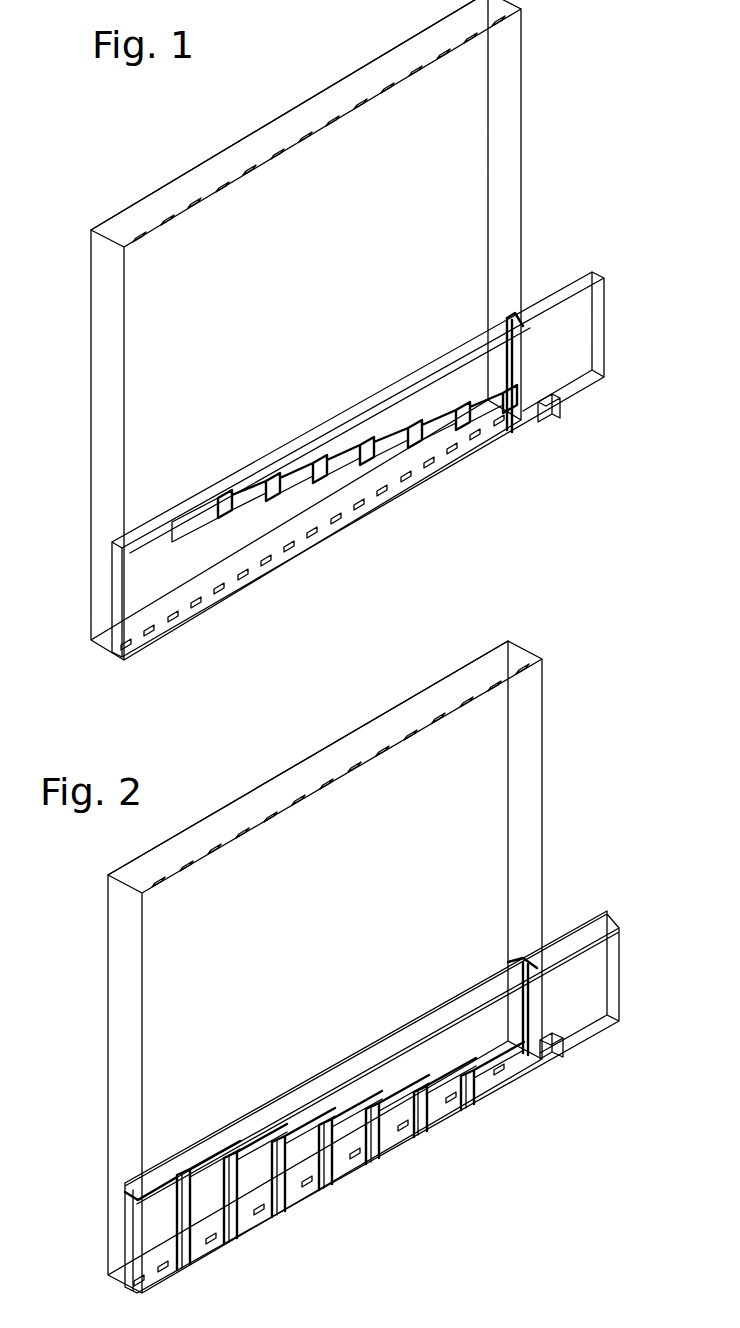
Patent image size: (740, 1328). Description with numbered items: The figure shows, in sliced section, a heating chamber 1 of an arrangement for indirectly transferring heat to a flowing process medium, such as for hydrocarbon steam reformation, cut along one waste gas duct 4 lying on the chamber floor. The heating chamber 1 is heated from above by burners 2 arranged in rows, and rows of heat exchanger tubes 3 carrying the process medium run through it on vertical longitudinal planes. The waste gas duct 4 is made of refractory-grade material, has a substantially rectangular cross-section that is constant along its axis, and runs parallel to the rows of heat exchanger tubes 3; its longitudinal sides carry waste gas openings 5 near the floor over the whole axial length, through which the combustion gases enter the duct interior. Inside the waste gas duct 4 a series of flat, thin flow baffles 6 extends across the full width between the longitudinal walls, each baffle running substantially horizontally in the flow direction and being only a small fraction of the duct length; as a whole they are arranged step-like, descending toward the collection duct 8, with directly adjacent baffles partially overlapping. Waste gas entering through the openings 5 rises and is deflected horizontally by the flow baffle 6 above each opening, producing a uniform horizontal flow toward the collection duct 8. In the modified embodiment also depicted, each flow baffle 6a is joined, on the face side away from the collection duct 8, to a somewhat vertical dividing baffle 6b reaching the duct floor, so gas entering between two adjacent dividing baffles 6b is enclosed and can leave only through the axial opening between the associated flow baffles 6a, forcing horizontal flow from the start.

In FIG. 1, the heating chamber 1 is at (98, 324).
In FIG. 2, the heating chamber 1 is at (116, 995).
In FIG. 1, the burners 2 is at (492, 22).
In FIG. 2, the burners 2 is at (517, 655).
In FIG. 1, the heat exchanger tubes 3 is at (175, 182).
In FIG. 2, the heat exchanger tubes 3 is at (258, 792).
In FIG. 1, the waste gas duct 4 is at (432, 462).
In FIG. 2, the waste gas duct 4 is at (392, 1143).
In FIG. 1, the waste gas openings 5 is at (243, 573).
In FIG. 2, the waste gas openings 5 is at (402, 1133).
In FIG. 1, the flow baffles 6 is at (290, 498).
In FIG. 2, the flow baffles 6a is at (330, 1193).
In FIG. 2, the dividing baffle 6b is at (190, 1260).
In FIG. 1, the collection duct 8 is at (577, 337).
In FIG. 2, the collection duct 8 is at (588, 975).